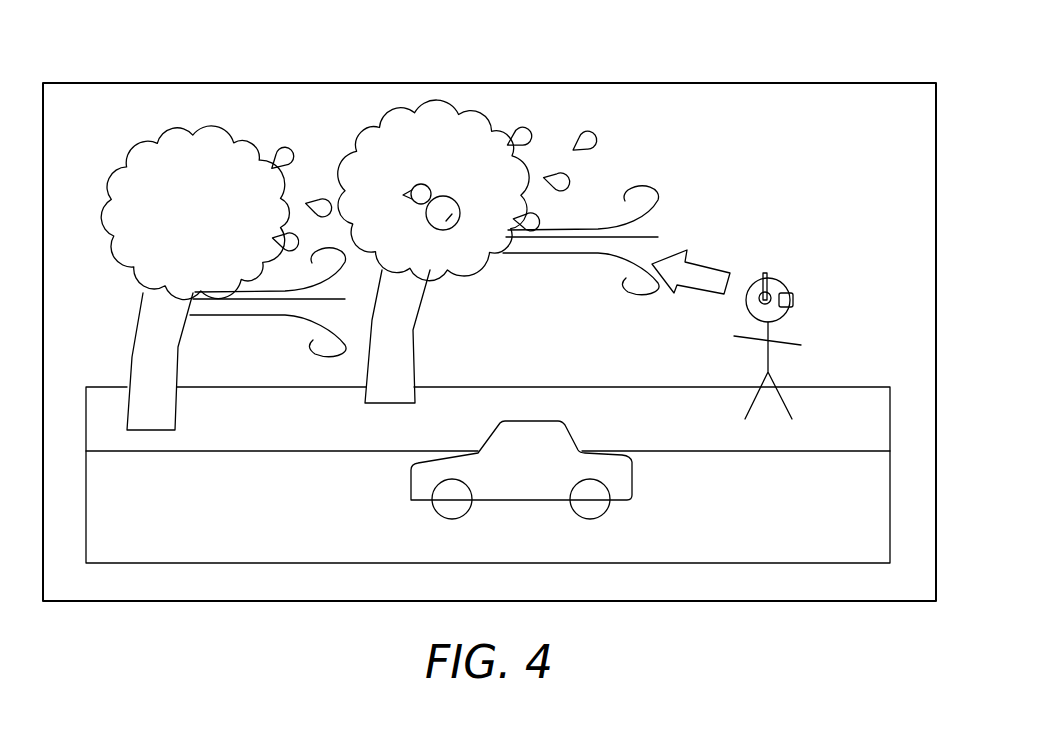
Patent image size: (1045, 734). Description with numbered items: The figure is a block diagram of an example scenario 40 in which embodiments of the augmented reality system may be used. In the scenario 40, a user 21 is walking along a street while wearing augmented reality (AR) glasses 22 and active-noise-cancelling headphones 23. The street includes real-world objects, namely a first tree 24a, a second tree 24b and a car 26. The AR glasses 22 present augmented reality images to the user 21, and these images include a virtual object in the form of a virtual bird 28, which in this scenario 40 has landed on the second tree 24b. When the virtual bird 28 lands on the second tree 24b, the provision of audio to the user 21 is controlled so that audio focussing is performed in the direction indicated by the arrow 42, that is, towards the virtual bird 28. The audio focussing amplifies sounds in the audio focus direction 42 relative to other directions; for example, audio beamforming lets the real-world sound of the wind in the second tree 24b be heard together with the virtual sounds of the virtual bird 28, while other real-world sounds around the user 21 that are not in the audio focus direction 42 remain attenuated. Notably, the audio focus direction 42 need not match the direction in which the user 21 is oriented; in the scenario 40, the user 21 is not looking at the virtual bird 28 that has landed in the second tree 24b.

The scenario 40 is at (890, 60).
The first tree 24a is at (183, 143).
The second tree 24b is at (421, 121).
The virtual bird 28 is at (443, 222).
The user 21 is at (800, 317).
The augmented reality (AR) glasses 22 is at (793, 298).
The ANC equipped headphones 23 is at (766, 272).
The audio-focus direction arrow 42 is at (697, 291).
The car 26 is at (523, 492).